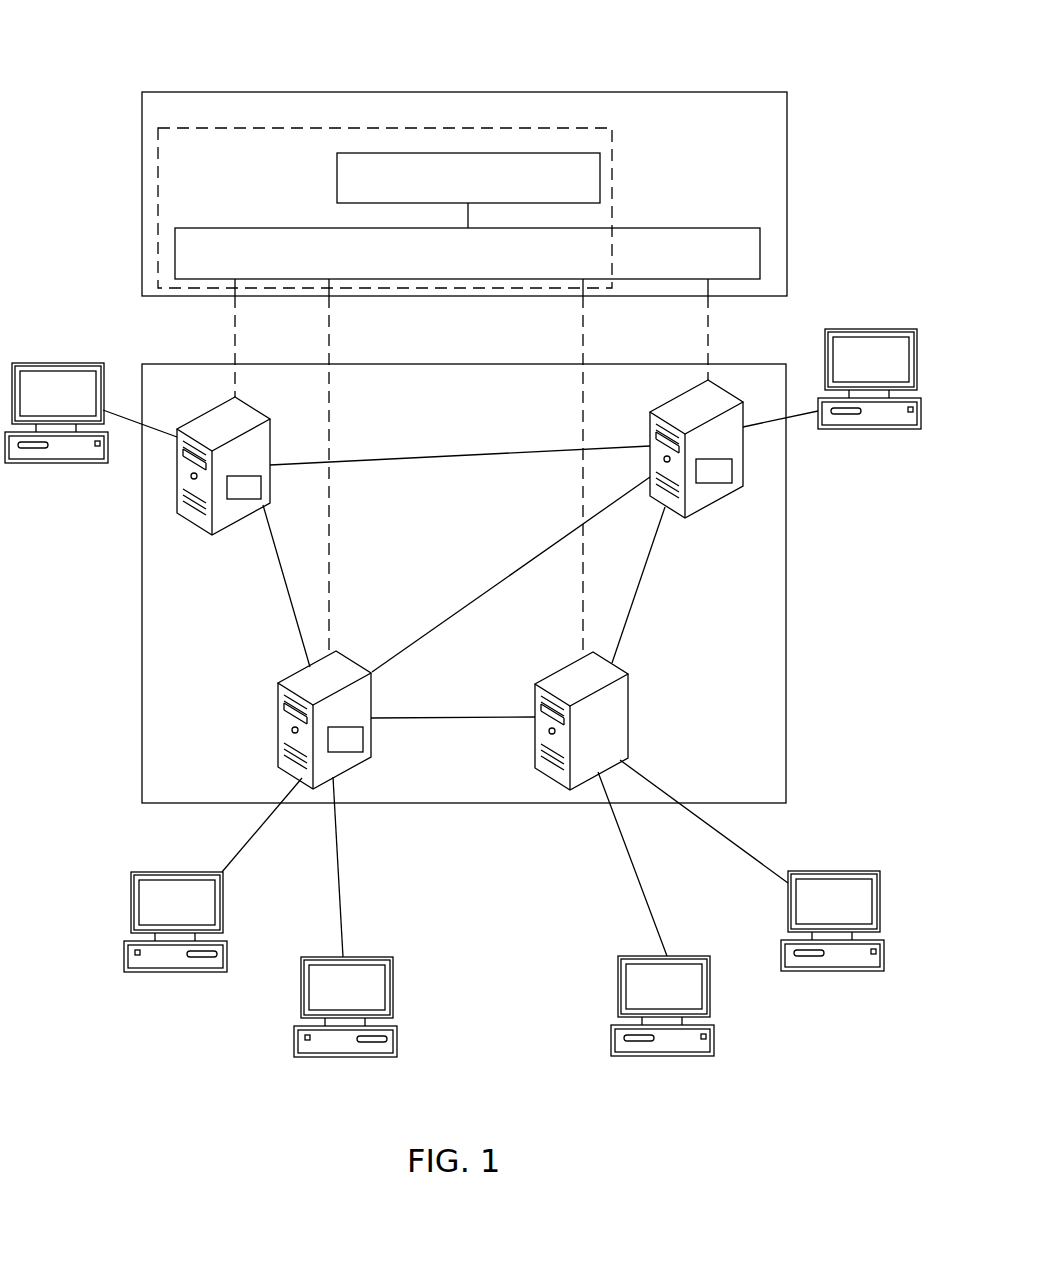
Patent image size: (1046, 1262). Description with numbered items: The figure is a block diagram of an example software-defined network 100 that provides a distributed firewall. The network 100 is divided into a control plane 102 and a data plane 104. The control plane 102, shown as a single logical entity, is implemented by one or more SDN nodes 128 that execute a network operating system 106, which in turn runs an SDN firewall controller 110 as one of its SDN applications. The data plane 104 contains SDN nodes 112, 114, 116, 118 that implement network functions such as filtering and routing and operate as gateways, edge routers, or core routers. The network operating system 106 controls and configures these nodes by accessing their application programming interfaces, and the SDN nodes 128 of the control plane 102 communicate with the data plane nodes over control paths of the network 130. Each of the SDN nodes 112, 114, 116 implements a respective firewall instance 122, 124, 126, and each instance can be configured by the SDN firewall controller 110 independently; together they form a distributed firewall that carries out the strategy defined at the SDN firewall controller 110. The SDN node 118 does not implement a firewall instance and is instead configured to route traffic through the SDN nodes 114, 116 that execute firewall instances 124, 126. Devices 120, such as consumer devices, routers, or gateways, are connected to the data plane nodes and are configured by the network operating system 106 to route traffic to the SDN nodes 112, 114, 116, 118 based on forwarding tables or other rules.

The software-defined network 100 is at (101, 33).
The control plane 102 is at (753, 91).
The data plane 104 is at (727, 363).
The network operating system 106 is at (268, 227).
The SDN firewall controller 110 is at (337, 170).
The SDN node 112 is at (235, 400).
The SDN node 114 is at (673, 398).
The SDN node 116 is at (278, 682).
The SDN node 118 is at (628, 673).
The devices 120 is at (40, 463).
The firewall instance 122 is at (247, 499).
The firewall instance 124 is at (720, 484).
The firewall instance 126 is at (352, 752).
The SDN nodes 128 is at (613, 158).
The control paths of the network 130 is at (235, 340).